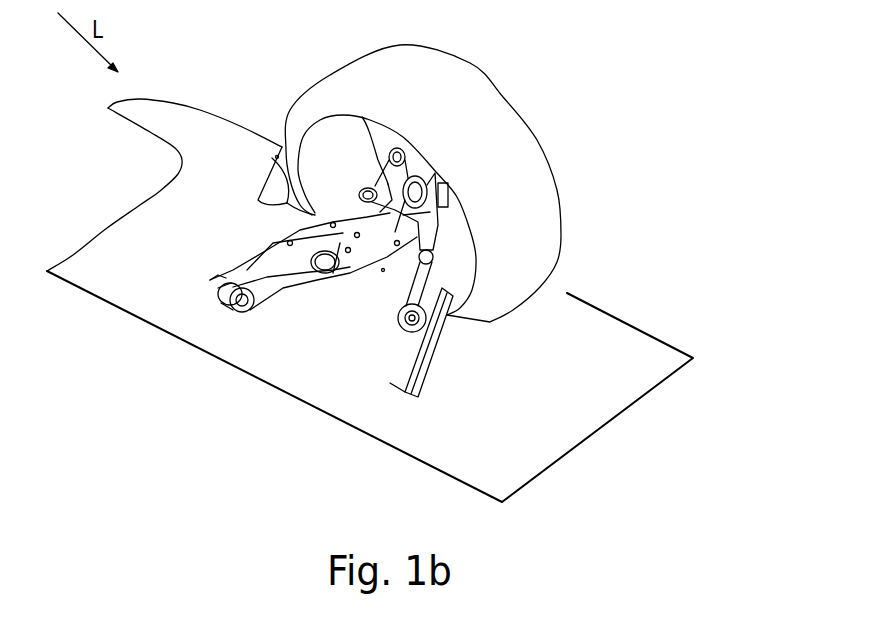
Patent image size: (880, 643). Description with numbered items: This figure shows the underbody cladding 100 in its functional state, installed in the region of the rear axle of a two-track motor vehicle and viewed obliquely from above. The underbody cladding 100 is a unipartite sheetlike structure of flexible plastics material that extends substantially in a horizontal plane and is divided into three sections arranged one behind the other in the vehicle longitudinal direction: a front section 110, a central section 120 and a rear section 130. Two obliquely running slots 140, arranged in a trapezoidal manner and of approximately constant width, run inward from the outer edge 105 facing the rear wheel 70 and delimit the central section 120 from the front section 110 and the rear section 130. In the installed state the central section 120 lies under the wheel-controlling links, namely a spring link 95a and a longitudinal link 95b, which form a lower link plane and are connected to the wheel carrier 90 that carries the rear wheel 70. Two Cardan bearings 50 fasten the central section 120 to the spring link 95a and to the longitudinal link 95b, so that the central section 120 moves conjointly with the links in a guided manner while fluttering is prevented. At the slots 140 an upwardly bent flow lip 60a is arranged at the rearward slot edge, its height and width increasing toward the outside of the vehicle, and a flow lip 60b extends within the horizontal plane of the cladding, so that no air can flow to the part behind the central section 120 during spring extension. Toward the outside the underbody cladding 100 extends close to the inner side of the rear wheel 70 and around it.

The Cardan bearing 50 is at (397, 328).
The flow lip 60a is at (283, 240).
The flow lip 60b is at (435, 363).
The rear wheel 70 is at (474, 144).
The wheel carrier 90 is at (450, 197).
The spring link 95a is at (270, 250).
The longitudinal link 95b is at (490, 322).
The underbody cladding 100 is at (647, 397).
The outer edge 105 is at (277, 157).
The front section 110 is at (544, 402).
The central section 120 is at (354, 347).
The rear section 130 is at (198, 251).
The slot 140 is at (229, 272).